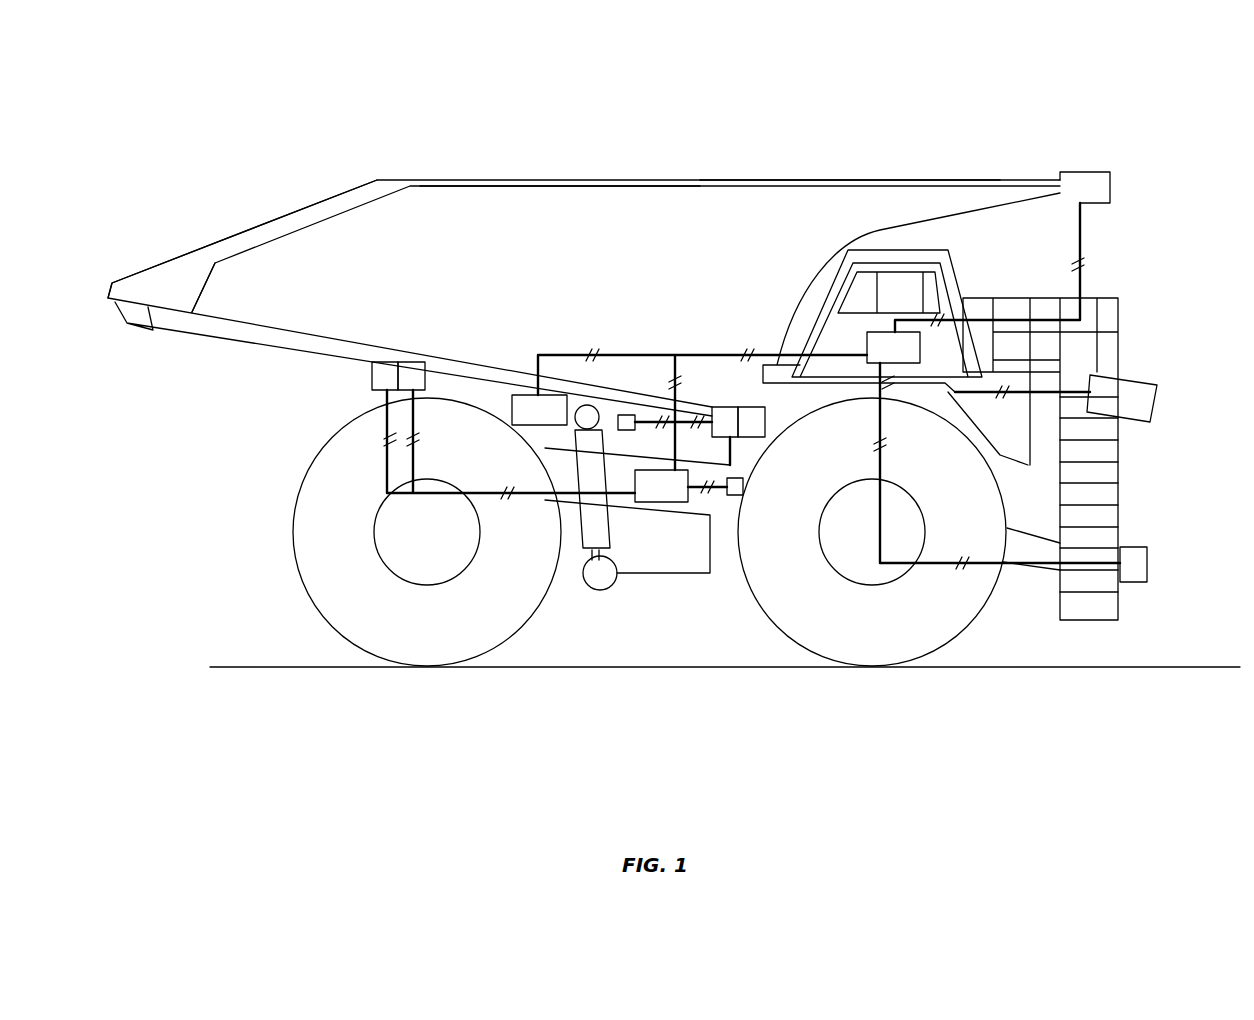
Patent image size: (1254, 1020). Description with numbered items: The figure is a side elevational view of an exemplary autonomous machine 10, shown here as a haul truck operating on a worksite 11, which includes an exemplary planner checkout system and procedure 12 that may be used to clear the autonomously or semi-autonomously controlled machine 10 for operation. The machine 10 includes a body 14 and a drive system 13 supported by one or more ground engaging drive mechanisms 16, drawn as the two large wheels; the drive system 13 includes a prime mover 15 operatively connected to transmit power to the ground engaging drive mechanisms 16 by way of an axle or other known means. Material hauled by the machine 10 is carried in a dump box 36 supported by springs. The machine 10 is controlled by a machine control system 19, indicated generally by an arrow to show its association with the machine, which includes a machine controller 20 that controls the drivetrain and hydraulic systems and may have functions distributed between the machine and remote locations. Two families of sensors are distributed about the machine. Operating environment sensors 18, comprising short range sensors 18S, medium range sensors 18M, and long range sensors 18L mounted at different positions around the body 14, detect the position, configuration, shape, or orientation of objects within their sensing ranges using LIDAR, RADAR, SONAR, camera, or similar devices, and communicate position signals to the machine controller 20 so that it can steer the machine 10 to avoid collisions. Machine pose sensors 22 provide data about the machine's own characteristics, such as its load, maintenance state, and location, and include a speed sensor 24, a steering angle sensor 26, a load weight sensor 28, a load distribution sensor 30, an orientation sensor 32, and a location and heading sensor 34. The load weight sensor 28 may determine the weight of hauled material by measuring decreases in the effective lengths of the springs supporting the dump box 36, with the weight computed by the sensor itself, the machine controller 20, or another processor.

The machine 10 is at (215, 566).
The worksite 11 is at (197, 137).
The planner checkout system and procedure 12 is at (695, 197).
The drive system 13 is at (653, 640).
The body 14 is at (585, 260).
The prime mover 15 is at (940, 347).
The ground engaging drive mechanisms 16 is at (380, 640).
The operating environment sensors 18 is at (510, 405).
The long range sensor 18L is at (1100, 197).
The medium range sensor 18M is at (1133, 392).
The short range sensor 18S is at (1133, 575).
The machine control system 19 is at (843, 174).
The machine controller 20 is at (882, 342).
The machine pose sensors 22 is at (672, 488).
The speed sensor 24 is at (735, 406).
The steering angle sensor 26 is at (767, 423).
The load weight sensor 28 is at (372, 372).
The load distribution sensor 30 is at (405, 362).
The orientation sensor 32 is at (738, 497).
The location and heading sensor 34 is at (626, 414).
The dump box 36 is at (553, 202).